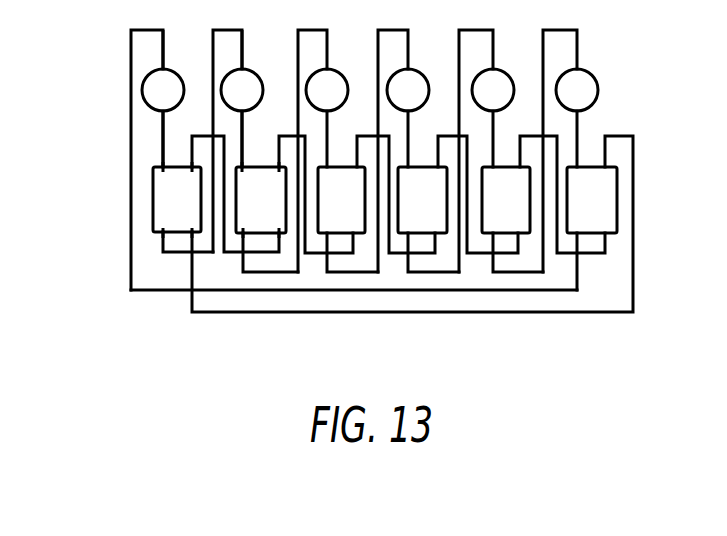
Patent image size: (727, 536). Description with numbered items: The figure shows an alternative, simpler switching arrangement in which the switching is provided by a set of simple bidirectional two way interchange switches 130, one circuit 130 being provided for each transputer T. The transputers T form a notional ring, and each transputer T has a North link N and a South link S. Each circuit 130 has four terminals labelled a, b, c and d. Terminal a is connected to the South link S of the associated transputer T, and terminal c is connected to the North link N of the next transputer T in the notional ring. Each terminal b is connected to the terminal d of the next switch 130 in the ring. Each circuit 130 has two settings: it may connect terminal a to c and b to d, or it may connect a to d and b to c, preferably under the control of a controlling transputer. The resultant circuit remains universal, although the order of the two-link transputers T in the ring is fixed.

The bidirectional two way interchange switch 130 is at (153, 198).
The transputer T is at (370, 90).
The North link N is at (214, 49).
The South link S is at (214, 139).
The terminal a is at (204, 179).
The terminal b is at (229, 179).
The terminal c is at (204, 223).
The terminal d is at (228, 223).